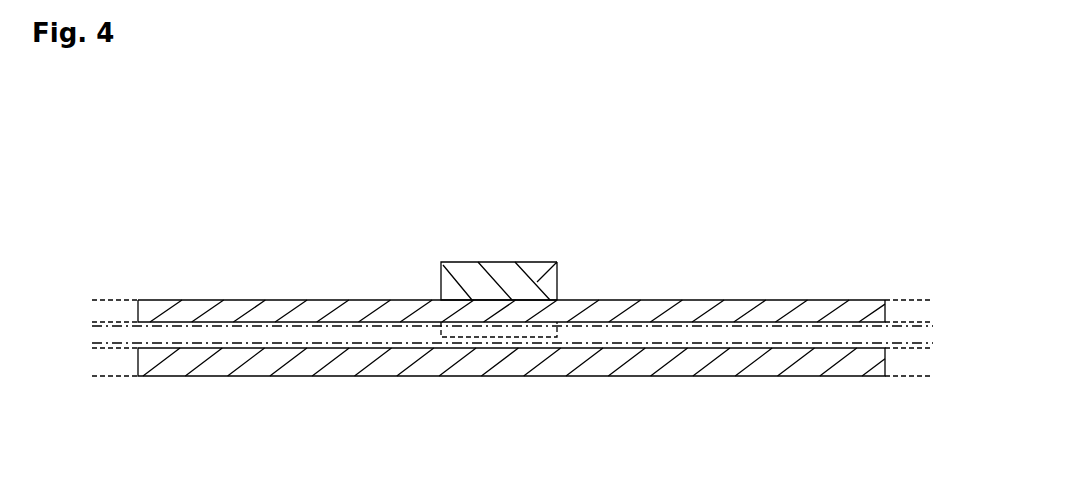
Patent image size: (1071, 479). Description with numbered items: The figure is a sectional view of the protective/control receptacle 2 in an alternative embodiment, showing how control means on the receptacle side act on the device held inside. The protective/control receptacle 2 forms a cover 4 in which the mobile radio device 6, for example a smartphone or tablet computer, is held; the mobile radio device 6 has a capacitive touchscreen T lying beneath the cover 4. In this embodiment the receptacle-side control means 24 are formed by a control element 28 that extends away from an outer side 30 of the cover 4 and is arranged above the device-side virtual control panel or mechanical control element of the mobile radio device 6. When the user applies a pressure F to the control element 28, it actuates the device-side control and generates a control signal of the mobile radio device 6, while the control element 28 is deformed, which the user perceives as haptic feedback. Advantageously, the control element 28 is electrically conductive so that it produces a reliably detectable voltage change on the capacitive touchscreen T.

The protective/control receptacle 2 is at (746, 300).
The cover 4 is at (232, 308).
The mobile radio device 6 is at (780, 332).
The receptacle-side control means 24 is at (463, 258).
The control element 28 is at (557, 263).
The outer side 30 is at (323, 297).
The capacitive touchscreen T is at (625, 325).
The pressure F is at (495, 261).